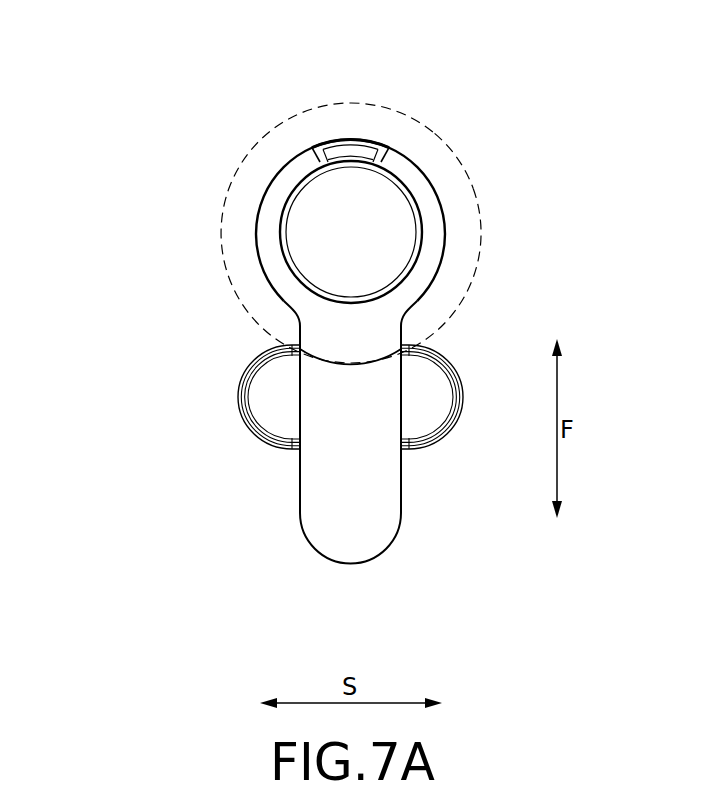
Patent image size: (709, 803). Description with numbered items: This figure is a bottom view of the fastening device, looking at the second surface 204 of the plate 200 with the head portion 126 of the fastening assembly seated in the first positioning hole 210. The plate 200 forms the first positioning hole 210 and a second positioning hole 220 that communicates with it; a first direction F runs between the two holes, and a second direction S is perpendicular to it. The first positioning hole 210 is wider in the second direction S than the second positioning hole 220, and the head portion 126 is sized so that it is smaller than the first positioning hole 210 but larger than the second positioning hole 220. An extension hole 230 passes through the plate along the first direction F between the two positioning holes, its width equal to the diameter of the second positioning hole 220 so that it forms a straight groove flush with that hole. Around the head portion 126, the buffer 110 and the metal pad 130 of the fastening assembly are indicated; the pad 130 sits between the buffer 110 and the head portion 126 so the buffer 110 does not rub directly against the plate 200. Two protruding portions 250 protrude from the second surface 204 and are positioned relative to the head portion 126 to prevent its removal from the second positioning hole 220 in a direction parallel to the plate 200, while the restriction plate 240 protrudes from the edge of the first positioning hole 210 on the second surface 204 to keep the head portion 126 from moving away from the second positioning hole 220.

The buffer 110 is at (422, 114).
The pad 130 is at (458, 153).
The head portion 126 is at (395, 222).
The plate 200 is at (458, 252).
The second surface 204 is at (212, 310).
The first positioning hole 210 is at (281, 179).
The second positioning hole 220 is at (382, 552).
The extension hole 230 is at (372, 390).
The restriction plate 240 is at (352, 147).
The protruding portions 250 is at (267, 397).